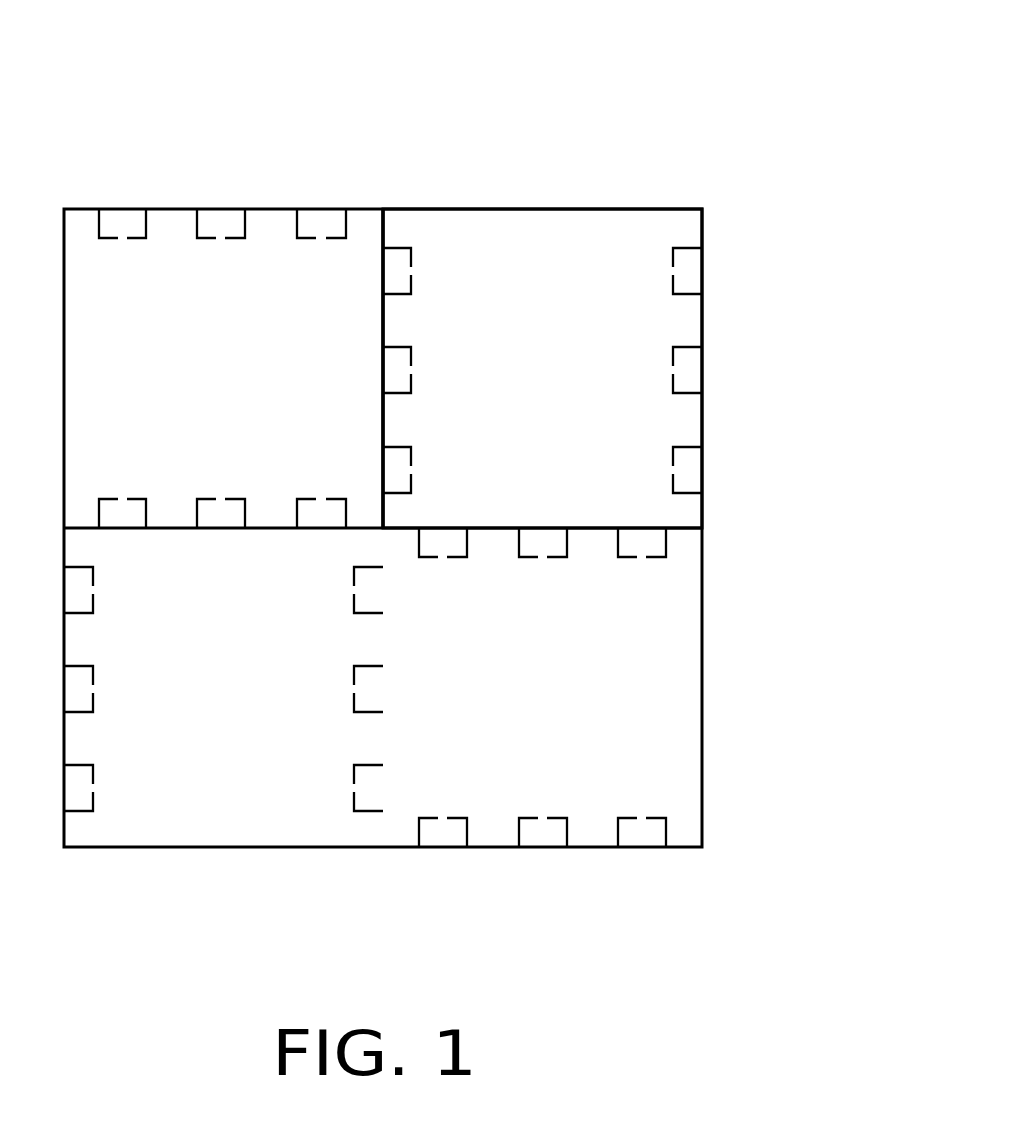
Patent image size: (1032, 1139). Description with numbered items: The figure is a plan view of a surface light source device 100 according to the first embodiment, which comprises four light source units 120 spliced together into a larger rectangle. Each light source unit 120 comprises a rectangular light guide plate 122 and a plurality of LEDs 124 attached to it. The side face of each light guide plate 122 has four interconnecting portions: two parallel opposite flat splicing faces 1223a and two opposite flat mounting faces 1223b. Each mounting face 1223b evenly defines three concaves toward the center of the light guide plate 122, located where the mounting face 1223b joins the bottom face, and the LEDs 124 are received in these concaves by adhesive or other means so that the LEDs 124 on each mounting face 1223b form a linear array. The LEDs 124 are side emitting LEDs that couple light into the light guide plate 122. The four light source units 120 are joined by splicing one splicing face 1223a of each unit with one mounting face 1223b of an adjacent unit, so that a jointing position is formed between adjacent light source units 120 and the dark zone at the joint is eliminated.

The surface light source device 100 is at (383, 434).
The light source unit 120 is at (650, 355).
The light guide plate 122 is at (657, 235).
The LEDs 124 is at (687, 378).
The splicing face 1223a is at (301, 326).
The mounting face 1223b is at (467, 326).